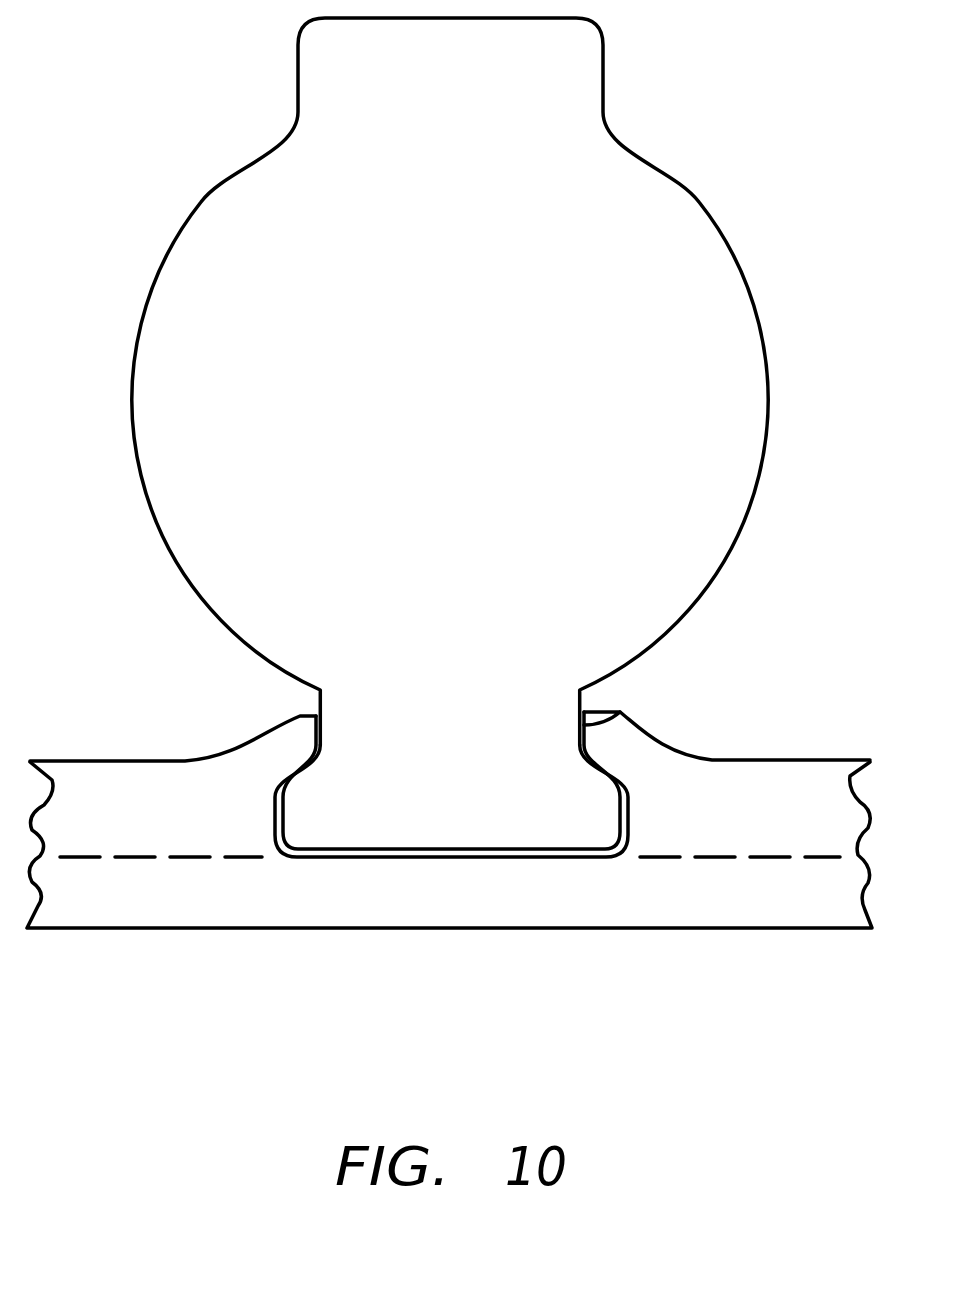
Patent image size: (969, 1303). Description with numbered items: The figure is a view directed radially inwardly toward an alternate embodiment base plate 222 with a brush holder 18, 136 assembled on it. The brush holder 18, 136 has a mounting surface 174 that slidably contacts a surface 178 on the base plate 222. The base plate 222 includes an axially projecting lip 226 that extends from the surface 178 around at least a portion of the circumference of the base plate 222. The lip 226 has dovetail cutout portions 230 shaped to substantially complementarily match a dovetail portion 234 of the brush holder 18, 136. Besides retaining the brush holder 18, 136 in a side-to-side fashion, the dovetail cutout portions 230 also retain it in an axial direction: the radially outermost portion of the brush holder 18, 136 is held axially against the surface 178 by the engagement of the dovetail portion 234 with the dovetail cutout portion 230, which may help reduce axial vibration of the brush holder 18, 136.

The brush holder 18 is at (497, 381).
The brush holder 136 is at (705, 217).
The mounting surface 174 is at (388, 857).
The dovetail portion 234 is at (593, 773).
The axially projecting lip 226 is at (785, 760).
The dovetail cutout portion 230 is at (620, 713).
The base plate 222 is at (768, 930).
The surface 178 is at (811, 857).